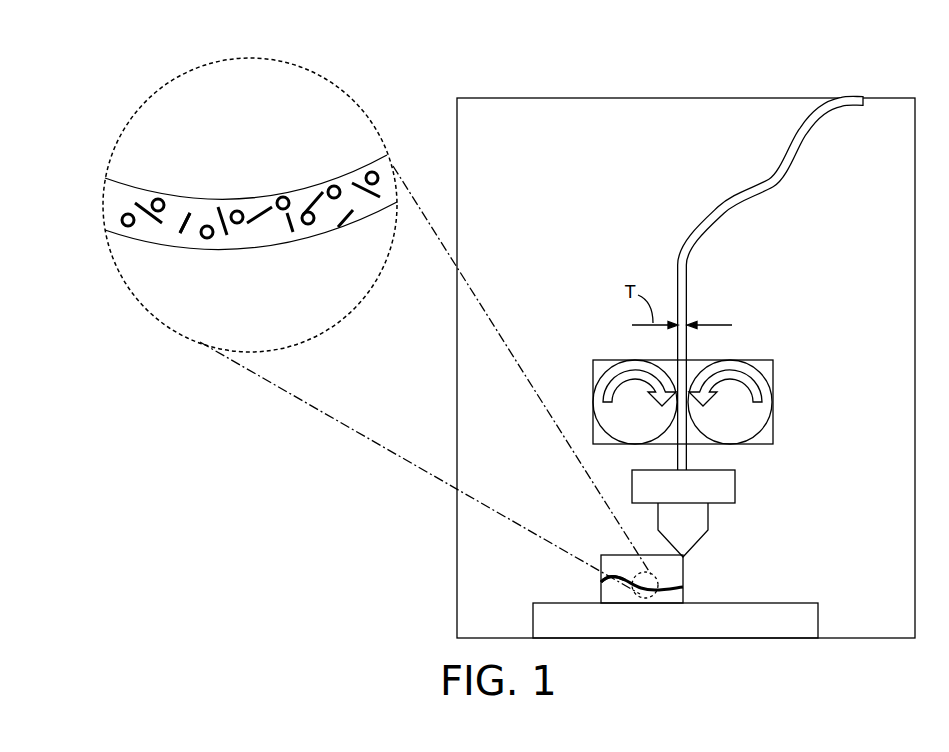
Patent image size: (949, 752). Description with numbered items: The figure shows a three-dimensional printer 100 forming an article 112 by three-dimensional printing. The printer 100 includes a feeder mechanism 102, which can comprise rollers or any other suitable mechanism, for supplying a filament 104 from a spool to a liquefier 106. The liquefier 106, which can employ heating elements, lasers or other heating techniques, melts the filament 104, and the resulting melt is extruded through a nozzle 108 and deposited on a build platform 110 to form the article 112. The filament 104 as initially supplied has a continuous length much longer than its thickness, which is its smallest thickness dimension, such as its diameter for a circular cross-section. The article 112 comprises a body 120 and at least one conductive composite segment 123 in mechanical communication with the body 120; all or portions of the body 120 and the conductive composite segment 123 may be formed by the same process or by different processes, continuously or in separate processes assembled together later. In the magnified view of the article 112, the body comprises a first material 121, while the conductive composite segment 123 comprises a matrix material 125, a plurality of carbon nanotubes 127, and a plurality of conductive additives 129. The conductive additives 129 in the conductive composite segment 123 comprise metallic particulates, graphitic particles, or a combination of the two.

The 3D printer 100 is at (548, 97).
The feeder mechanism 102 is at (608, 360).
The filament 104 is at (716, 212).
The liquefier 106 is at (735, 485).
The nozzle 108 is at (697, 543).
The build platform 110 is at (818, 623).
The article 112 is at (601, 582).
The body 120 is at (610, 555).
The first material 121 is at (330, 288).
The conductive composite segment 123 is at (649, 581).
The matrix material 125 is at (302, 200).
The carbon nanotubes 127 is at (182, 225).
The conductive additives 129 is at (207, 240).